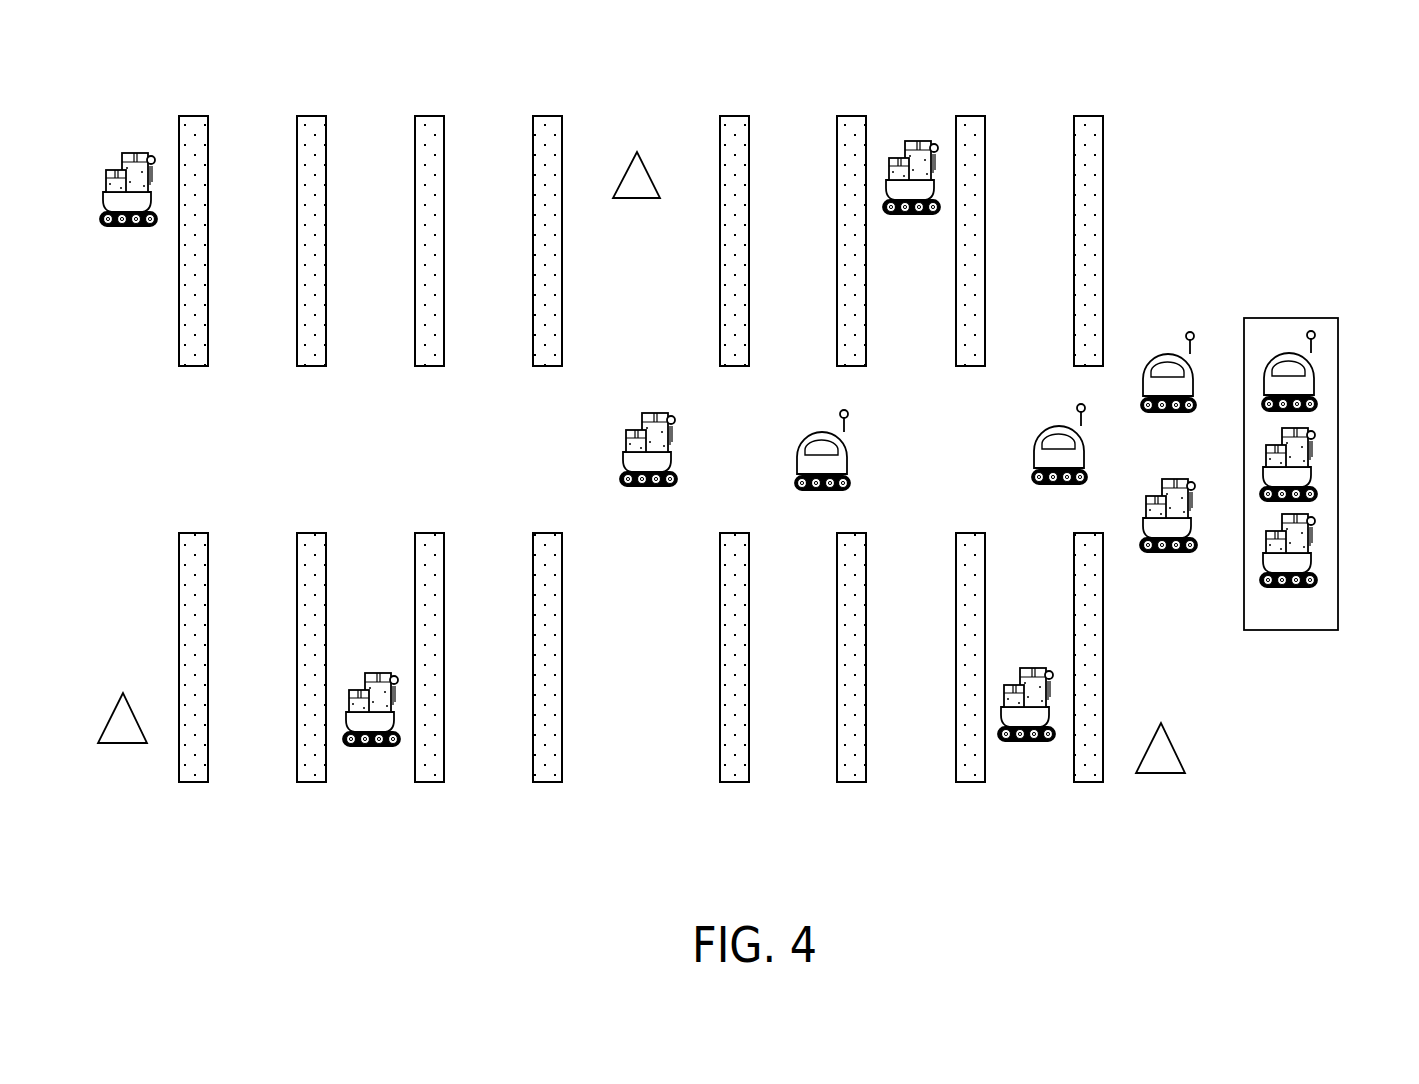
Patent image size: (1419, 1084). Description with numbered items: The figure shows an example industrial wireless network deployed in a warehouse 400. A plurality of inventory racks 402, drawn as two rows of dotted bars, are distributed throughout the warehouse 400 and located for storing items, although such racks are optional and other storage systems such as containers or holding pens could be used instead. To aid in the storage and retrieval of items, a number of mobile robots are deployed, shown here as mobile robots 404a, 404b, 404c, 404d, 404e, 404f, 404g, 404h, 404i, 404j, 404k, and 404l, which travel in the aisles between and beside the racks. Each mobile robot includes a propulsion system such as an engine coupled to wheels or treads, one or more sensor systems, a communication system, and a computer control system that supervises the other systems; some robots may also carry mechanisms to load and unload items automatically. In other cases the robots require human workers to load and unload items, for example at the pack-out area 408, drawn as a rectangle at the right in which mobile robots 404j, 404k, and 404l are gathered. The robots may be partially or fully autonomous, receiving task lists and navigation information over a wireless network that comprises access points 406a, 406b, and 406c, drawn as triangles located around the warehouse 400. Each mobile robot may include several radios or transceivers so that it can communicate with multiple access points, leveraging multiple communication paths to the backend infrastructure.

The warehouse 400 is at (1305, 126).
The inventory racks 402 is at (1108, 108).
The mobile robot 404a is at (649, 485).
The mobile robot 404b is at (820, 490).
The mobile robot 404c is at (1060, 484).
The mobile robot 404d is at (1167, 412).
The mobile robot 404e is at (887, 214).
The mobile robot 404f is at (1003, 741).
The mobile robot 404g is at (112, 227).
The mobile robot 404h is at (348, 746).
The mobile robot 404i is at (1167, 552).
The mobile robot 404j is at (1313, 385).
The mobile robot 404k is at (1313, 470).
The mobile robot 404l is at (1313, 545).
The access point 406a is at (639, 152).
The access point 406b is at (123, 693).
The access point 406c is at (1173, 747).
The pack-out area 408 is at (1293, 318).